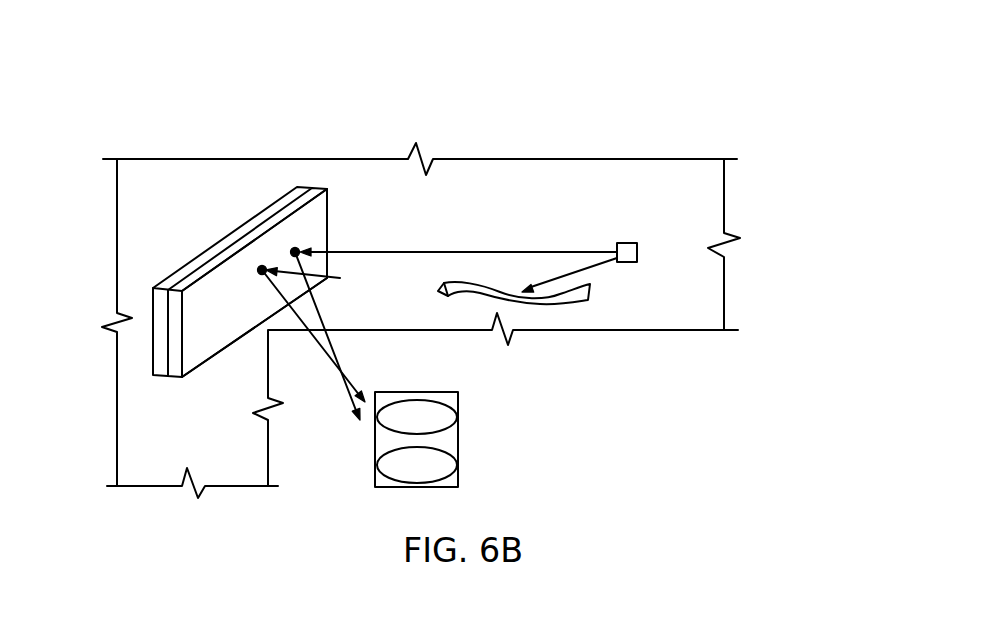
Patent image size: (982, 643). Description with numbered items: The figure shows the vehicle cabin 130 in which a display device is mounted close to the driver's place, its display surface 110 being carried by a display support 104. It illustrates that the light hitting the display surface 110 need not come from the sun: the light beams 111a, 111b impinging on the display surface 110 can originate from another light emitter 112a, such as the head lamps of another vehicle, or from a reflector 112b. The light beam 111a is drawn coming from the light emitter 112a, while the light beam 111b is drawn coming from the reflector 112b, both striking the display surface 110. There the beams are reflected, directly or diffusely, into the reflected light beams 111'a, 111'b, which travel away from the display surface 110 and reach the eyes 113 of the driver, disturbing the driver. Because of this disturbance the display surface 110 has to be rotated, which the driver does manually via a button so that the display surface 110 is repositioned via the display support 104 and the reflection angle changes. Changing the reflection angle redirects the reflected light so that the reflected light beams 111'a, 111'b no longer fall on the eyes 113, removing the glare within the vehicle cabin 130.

The display support 104 is at (207, 260).
The display surface 110 is at (312, 226).
The light beam 111a is at (490, 248).
The light beam 111b is at (407, 293).
The reflected light beam 111'a is at (371, 336).
The reflected light beam 111'b is at (313, 362).
The light emitter 112a is at (637, 252).
The reflector 112b is at (568, 298).
The eyes 113 is at (430, 417).
The vehicle cabin 130 is at (656, 211).